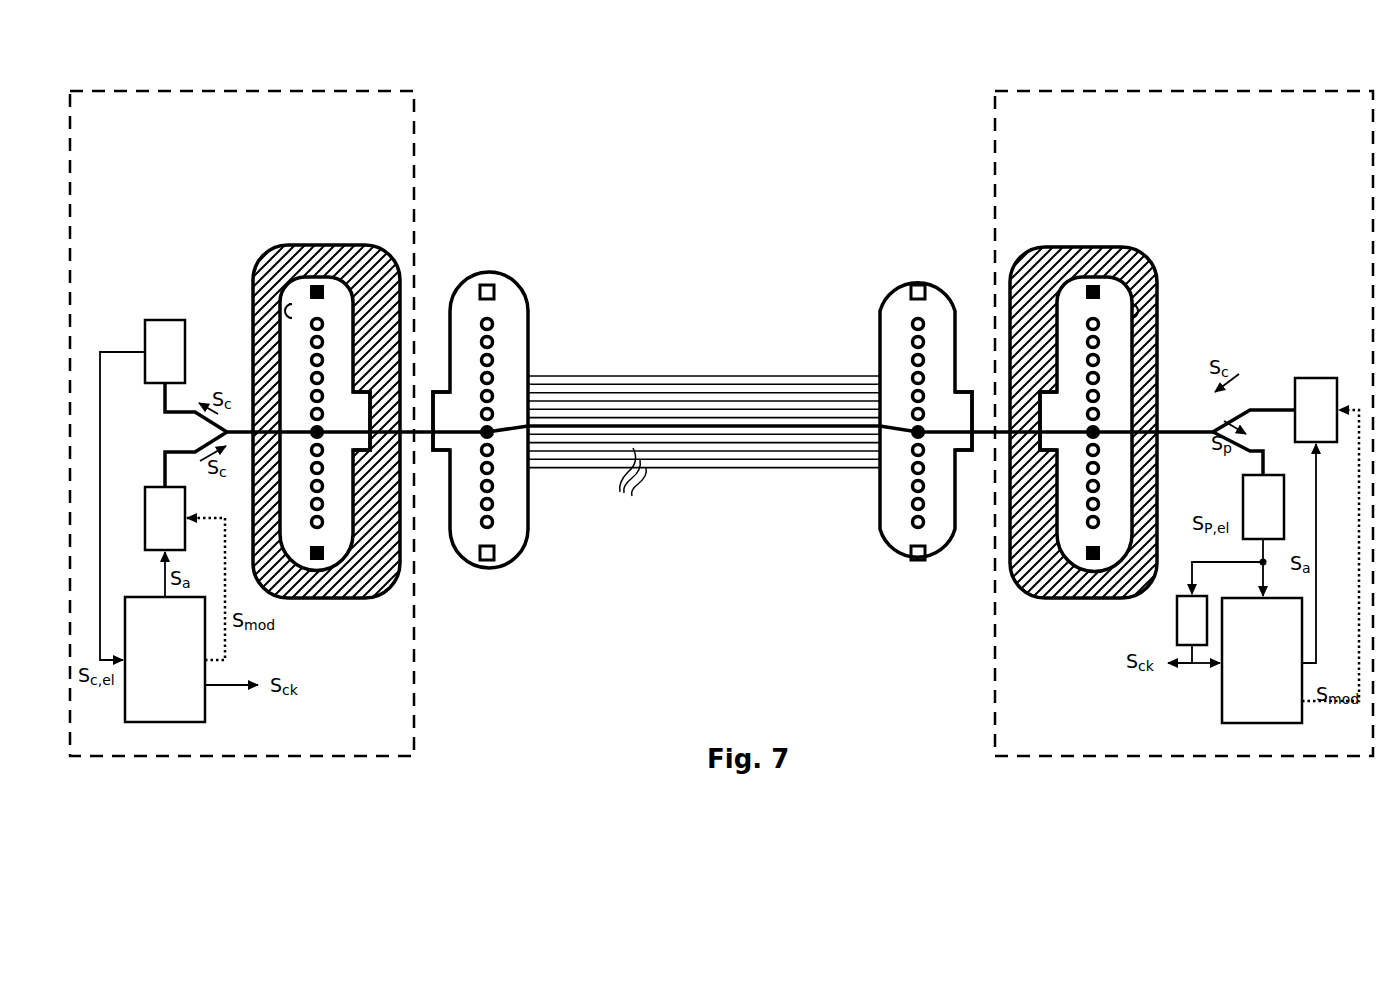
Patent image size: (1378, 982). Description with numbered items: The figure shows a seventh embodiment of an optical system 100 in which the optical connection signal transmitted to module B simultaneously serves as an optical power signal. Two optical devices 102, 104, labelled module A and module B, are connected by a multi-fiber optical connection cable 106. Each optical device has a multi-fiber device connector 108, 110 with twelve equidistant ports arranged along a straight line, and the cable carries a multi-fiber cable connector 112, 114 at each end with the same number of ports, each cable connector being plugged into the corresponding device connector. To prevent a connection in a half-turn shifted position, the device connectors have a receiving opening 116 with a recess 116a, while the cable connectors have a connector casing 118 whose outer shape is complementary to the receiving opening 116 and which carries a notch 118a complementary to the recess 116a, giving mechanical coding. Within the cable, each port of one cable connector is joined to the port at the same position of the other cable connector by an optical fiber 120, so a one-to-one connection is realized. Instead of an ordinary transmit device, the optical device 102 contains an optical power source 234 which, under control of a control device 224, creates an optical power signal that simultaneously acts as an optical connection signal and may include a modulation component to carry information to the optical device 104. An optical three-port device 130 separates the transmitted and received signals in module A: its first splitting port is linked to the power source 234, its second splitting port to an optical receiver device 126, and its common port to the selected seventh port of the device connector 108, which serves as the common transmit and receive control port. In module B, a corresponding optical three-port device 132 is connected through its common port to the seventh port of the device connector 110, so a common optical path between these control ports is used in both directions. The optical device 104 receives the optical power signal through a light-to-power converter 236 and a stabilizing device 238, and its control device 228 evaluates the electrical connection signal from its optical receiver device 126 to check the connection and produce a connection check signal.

The optical system 100 is at (726, 146).
The optical device 102 is at (247, 90).
The optical device 104 is at (1152, 90).
The multi-fiber optical connection cable 106 is at (670, 366).
The multi-fiber device connector 108 is at (315, 244).
The multi-fiber device connector 110 is at (1090, 246).
The multi-fiber cable connector 112 is at (531, 288).
The multi-fiber cable connector 114 is at (885, 290).
The receiving opening 116 is at (283, 322).
The recess 116a is at (360, 410).
The connector casing 118 is at (494, 272).
The notch 118a is at (437, 456).
The optical fiber 120 is at (615, 483).
The optical receiver device 126 is at (160, 330).
The optical 3-port device 130 is at (212, 431).
The optical 3-port device 132 is at (1254, 437).
The control device 224 is at (200, 708).
The control device 228 is at (1232, 683).
The optical power source 234 is at (152, 505).
The light-to-power converter 236 is at (1252, 490).
The stabilizing device 238 is at (1181, 601).